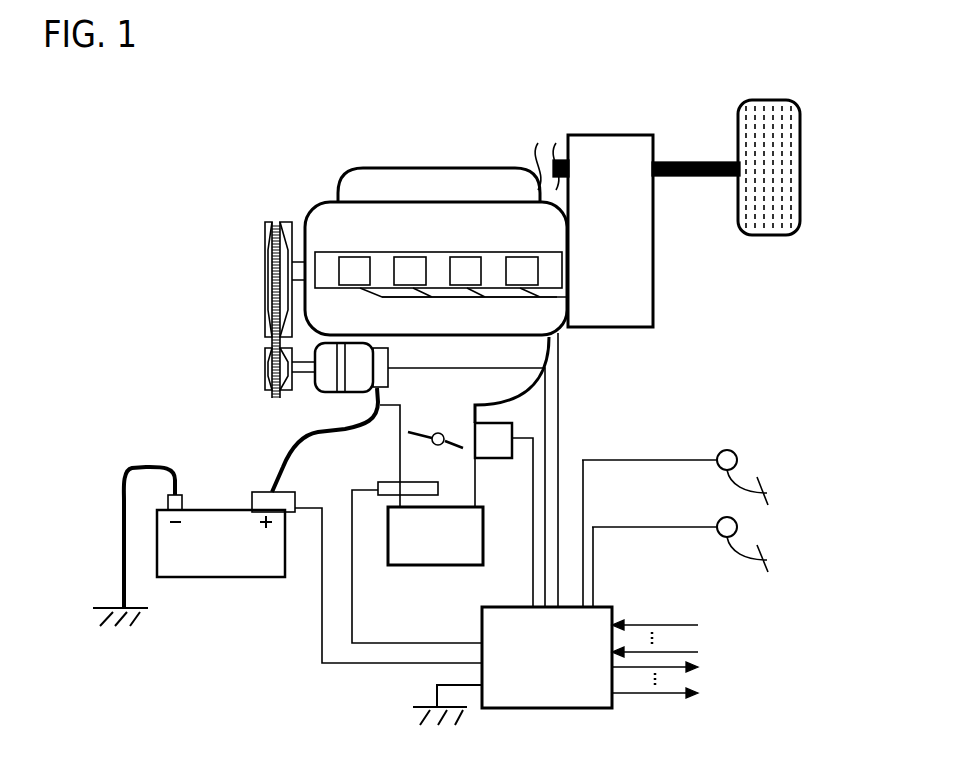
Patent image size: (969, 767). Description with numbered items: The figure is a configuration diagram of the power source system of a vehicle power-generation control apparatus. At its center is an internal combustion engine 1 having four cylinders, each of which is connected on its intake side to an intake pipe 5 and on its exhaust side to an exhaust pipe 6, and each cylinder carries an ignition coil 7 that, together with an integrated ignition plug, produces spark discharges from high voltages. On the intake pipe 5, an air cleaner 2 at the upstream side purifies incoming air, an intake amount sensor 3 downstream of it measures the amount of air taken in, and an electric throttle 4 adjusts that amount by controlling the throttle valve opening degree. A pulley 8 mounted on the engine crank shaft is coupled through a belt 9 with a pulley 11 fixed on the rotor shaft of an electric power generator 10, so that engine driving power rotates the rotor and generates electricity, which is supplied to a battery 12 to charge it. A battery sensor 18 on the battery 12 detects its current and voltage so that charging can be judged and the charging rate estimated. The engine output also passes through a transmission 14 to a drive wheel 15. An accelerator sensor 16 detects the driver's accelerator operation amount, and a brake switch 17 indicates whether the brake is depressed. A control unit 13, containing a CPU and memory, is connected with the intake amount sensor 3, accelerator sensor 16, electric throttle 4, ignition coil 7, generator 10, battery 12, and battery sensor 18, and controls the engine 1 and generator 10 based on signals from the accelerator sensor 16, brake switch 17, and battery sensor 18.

The internal combustion engine 1 is at (523, 224).
The air cleaner 2 is at (448, 565).
The intake amount sensor 3 is at (383, 493).
The electric throttle 4 is at (503, 430).
The intake pipe 5 is at (527, 355).
The exhaust pipe 6 is at (382, 188).
The ignition coils 7 is at (357, 267).
The pulley 8 is at (267, 240).
The belt 9 is at (272, 325).
The electric power generator 10 is at (327, 385).
The pulley 11 is at (265, 372).
The battery 12 is at (193, 547).
The control unit 13 is at (582, 692).
The transmission 14 is at (607, 147).
The drive wheel 15 is at (763, 223).
The accelerator sensor 16 is at (737, 448).
The brake switch 17 is at (740, 522).
The battery sensor 18 is at (283, 508).